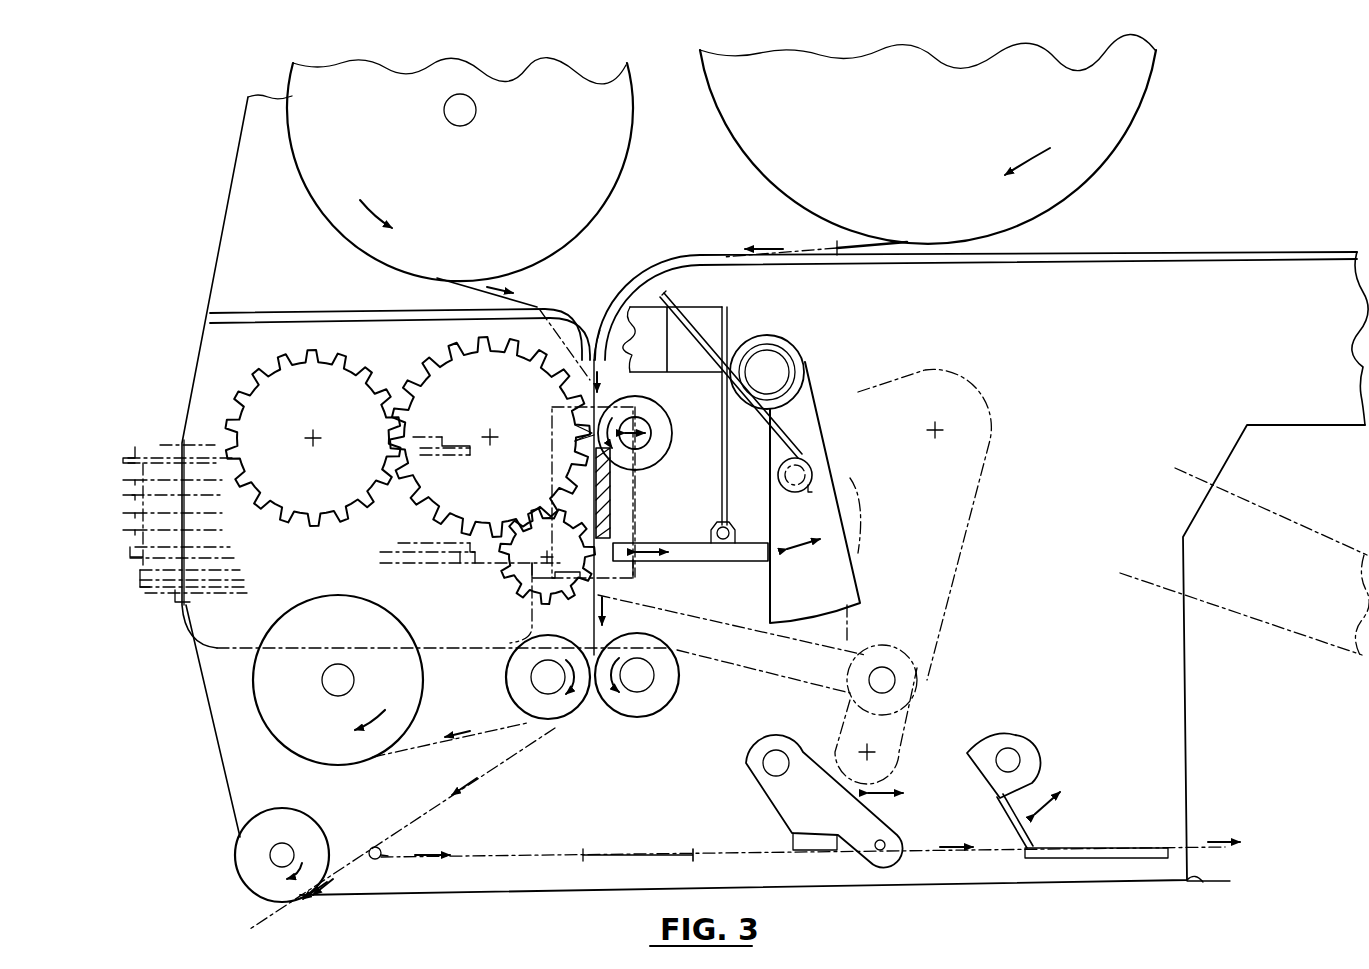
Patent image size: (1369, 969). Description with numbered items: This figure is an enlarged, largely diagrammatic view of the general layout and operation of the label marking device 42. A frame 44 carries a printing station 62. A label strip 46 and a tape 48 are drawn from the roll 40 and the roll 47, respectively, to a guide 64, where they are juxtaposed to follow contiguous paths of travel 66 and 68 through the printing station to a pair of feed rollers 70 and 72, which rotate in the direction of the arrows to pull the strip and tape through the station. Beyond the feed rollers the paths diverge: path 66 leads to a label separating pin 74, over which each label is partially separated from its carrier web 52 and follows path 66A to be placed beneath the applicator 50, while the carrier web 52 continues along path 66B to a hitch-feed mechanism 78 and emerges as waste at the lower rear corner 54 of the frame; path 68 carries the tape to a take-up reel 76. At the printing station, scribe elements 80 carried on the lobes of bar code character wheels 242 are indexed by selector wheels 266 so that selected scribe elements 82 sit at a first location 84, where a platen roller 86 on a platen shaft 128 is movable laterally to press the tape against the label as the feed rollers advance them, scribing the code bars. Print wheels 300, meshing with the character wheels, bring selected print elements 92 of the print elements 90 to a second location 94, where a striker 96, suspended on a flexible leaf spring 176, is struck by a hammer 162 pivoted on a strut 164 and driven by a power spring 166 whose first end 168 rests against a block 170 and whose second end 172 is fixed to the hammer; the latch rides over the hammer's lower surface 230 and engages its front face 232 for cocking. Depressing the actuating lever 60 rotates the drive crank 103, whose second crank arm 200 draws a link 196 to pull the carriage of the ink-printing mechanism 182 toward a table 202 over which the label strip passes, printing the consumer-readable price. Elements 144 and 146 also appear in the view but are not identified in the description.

The roll 40 is at (1146, 100).
The label marking device 42 is at (1264, 252).
The frame 44 is at (1214, 458).
The label strip 46 is at (837, 248).
The roll 47 is at (290, 130).
The tape 48 is at (462, 291).
The applicator 50 is at (259, 876).
The carrier web 52 is at (640, 854).
The lower rear corner 54 is at (1206, 883).
The actuating lever 60 is at (1282, 632).
The printing station 62 is at (554, 476).
The guide 64 is at (600, 332).
The path of travel 66 is at (607, 380).
The path 66A is at (380, 858).
The path 66B is at (533, 856).
The path of travel 68 is at (566, 354).
The feed roller 70 is at (514, 680).
The feed roller 72 is at (670, 680).
The pin 74 is at (386, 852).
The take-up reel 76 is at (318, 750).
The hitch-feed mechanism 78 is at (788, 828).
The scribe elements 80 is at (448, 344).
The selected scribe elements 82 is at (580, 430).
The first location 84 is at (580, 440).
The platen roller 86 is at (654, 422).
The print elements 90 is at (510, 579).
The selected print elements 92 is at (632, 578).
The second location 94 is at (565, 556).
The striker 96 is at (694, 522).
The drive crank 103 is at (950, 368).
The platen shaft 128 is at (652, 439).
The arm 144 is at (1031, 822).
The pivot 146 is at (1011, 756).
The hammer 162 is at (836, 570).
The strut 164 is at (782, 350).
The power spring 166 is at (790, 372).
The first end 168 is at (674, 299).
The block 170 is at (646, 299).
The second end 172 is at (811, 482).
The leaf spring 176 is at (729, 468).
The ink-printing mechanism 182 is at (150, 444).
The link 196 is at (773, 686).
The second crank arm 200 is at (930, 658).
The table 202 is at (612, 493).
The lower surface 230 is at (810, 640).
The front face 232 is at (768, 592).
The bar code character wheels 242 is at (451, 514).
The selector wheels 266 is at (282, 370).
The print wheels 300 is at (536, 614).